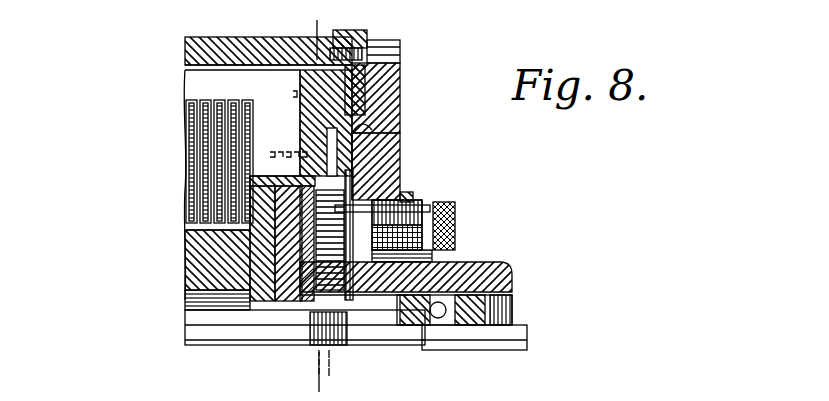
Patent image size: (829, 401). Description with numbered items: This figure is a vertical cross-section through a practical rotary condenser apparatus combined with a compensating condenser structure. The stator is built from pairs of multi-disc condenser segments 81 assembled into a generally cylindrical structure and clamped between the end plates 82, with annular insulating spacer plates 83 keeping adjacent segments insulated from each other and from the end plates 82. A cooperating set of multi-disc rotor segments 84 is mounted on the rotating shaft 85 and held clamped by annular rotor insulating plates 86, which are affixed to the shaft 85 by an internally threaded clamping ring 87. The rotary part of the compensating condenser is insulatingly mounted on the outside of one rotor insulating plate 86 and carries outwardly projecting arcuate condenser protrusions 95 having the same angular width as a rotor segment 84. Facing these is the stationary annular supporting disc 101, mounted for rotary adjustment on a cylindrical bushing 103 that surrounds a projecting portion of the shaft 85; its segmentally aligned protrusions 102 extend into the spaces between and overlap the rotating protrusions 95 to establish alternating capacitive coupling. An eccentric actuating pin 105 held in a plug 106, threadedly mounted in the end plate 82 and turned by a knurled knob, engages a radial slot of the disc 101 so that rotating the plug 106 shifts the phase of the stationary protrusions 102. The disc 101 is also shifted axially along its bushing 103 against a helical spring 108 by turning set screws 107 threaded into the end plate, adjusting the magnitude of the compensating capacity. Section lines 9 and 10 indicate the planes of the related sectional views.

The section line 9- 9 is at (317, 20).
The section line 10- 10 is at (338, 138).
The multi-disc condenser segments 81 is at (230, 82).
The end plates 82 is at (378, 97).
The annular insulating spacer plates 83 is at (388, 90).
The multi-disc rotor segments 84 is at (205, 257).
The rotating shaft 85 is at (200, 327).
The annular rotor insulating plates 86 is at (268, 232).
The internally threaded clamping ring 87 is at (350, 300).
The arcuate condenser protrusions 95 is at (402, 153).
The annular supporting disc 101 is at (478, 264).
The segmentally aligned protrusions 102 is at (272, 262).
The cylindrical bushing 103 is at (365, 302).
The actuating pin 105 is at (420, 196).
The plug 106 is at (428, 203).
The set screws 107 is at (437, 260).
The helical spring 108 is at (297, 305).